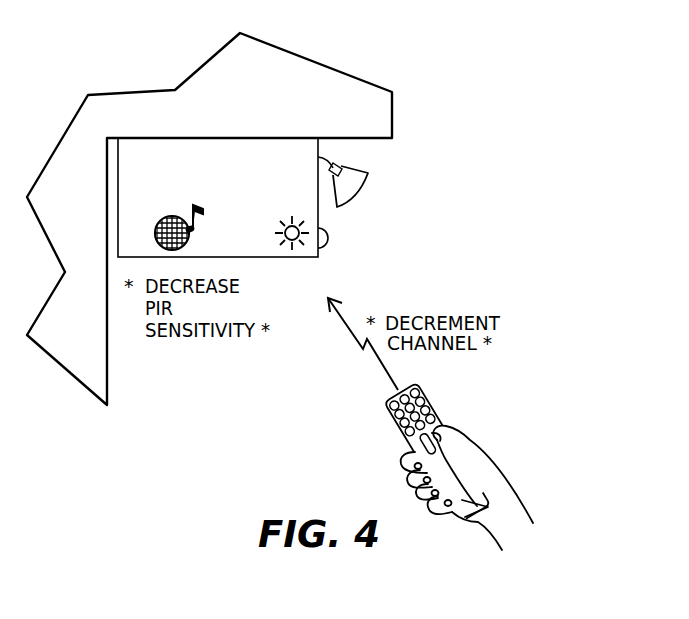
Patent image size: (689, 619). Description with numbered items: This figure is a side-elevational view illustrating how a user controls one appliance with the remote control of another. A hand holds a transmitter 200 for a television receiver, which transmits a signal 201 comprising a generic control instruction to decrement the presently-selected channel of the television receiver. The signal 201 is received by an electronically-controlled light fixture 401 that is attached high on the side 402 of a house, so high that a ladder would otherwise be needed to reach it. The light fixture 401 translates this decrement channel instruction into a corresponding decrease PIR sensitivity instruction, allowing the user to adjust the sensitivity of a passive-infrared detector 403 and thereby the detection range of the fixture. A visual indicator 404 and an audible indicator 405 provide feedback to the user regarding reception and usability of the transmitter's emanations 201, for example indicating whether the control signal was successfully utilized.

The transmitter 200 is at (443, 422).
The signal 201 is at (345, 332).
The electronically-controlled light fixture 401 is at (303, 152).
The side of a house 402 is at (107, 380).
The passive-infrared (PIR) detector 403 is at (328, 231).
The visual indicator 404 is at (288, 226).
The audible indicator 405 is at (163, 219).